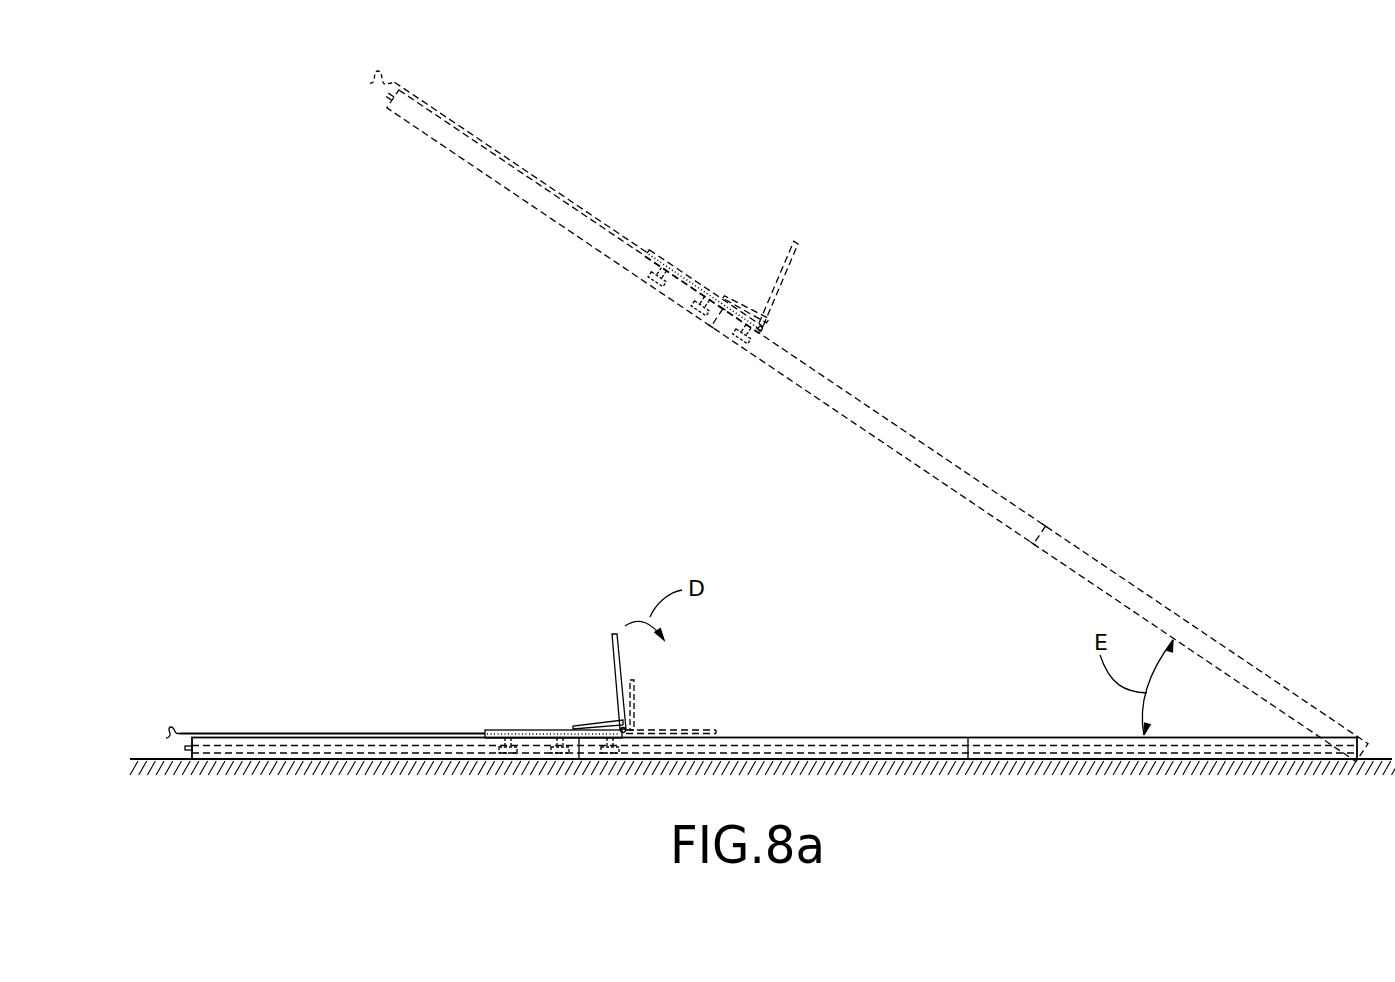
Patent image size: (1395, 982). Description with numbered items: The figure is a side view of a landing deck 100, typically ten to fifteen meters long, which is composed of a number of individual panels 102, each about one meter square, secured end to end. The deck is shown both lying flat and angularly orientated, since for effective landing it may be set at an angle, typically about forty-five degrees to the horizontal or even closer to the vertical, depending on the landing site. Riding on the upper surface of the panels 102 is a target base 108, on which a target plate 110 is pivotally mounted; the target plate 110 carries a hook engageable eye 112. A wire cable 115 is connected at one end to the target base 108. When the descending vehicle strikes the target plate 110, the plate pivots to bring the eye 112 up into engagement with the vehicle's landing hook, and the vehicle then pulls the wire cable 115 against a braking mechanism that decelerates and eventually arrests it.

The landing deck 100 is at (725, 362).
The panel 102 is at (813, 738).
The target base 108 is at (497, 728).
The target plate 110 is at (620, 657).
The hook engageable eye 112 is at (622, 697).
The wire cable 115 is at (185, 732).